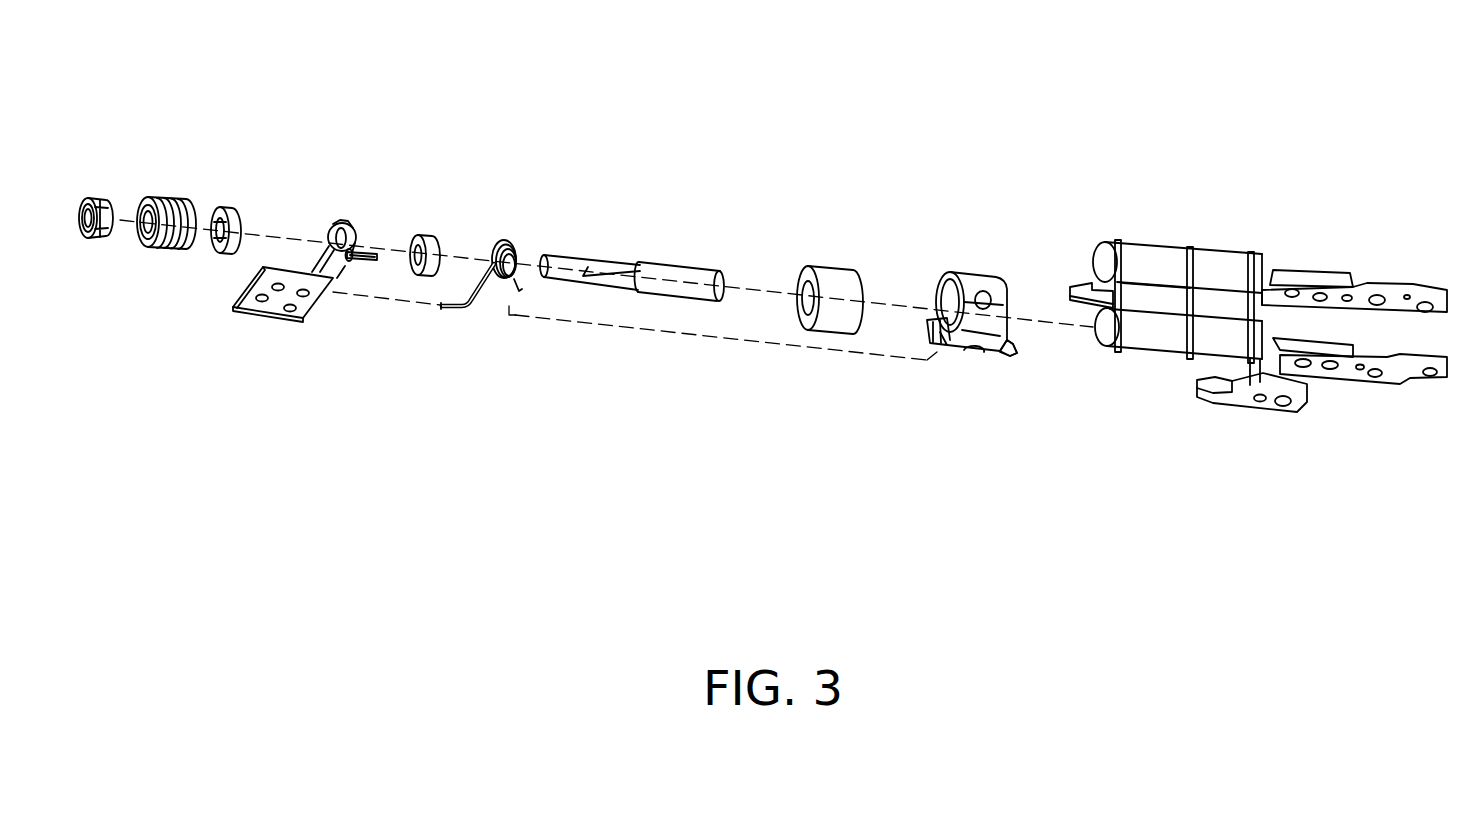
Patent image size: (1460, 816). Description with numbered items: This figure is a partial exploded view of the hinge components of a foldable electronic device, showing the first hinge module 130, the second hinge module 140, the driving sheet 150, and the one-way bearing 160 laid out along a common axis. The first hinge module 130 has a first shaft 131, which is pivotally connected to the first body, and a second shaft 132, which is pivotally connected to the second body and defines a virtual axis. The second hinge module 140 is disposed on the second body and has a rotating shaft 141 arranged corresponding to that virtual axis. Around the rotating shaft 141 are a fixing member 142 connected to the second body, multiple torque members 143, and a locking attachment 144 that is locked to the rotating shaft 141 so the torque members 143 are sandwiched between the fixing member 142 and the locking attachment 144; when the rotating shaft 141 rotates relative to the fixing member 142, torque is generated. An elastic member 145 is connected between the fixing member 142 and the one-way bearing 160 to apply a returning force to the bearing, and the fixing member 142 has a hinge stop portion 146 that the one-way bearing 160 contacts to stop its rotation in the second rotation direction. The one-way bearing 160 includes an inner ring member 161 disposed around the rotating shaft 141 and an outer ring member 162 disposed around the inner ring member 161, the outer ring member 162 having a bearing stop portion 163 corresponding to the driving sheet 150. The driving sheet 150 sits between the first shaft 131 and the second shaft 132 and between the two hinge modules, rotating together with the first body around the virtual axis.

The first hinge module 130 is at (1225, 168).
The first shaft 131 is at (1144, 253).
The second shaft 132 is at (1157, 330).
The second hinge module 140 is at (147, 74).
The rotating shaft 141 is at (657, 273).
The fixing member 142 is at (327, 254).
The torque members 143 is at (157, 197).
The locking attachment 144 is at (97, 195).
The elastic member 145 is at (499, 246).
The hinge stop portion 146 is at (363, 262).
The driving sheet 150 is at (1083, 287).
The one-way bearing 160 is at (853, 168).
The inner ring member 161 is at (843, 283).
The outer ring member 162 is at (970, 285).
The bearing stop portion 163 is at (1003, 357).